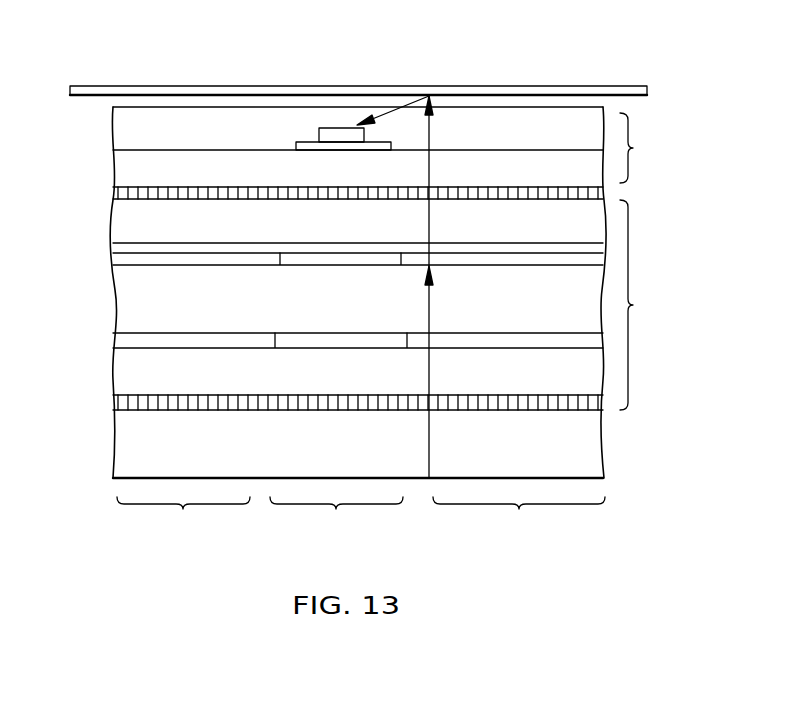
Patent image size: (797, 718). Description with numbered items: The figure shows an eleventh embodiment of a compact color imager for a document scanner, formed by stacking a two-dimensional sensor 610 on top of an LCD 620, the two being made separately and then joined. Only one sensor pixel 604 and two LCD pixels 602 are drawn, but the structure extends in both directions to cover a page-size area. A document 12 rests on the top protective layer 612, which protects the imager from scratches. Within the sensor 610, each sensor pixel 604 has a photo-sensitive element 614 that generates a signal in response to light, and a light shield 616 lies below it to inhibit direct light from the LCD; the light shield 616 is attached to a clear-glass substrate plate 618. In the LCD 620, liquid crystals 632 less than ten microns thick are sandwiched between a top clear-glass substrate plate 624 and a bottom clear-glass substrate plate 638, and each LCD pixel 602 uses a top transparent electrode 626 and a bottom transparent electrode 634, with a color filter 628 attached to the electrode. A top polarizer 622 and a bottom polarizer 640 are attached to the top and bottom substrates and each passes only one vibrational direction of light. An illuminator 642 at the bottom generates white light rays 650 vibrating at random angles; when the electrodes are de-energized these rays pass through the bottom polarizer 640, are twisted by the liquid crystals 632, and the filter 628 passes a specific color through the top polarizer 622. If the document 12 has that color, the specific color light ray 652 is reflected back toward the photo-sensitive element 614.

The document 12 is at (615, 86).
The top protective layer 612 is at (114, 113).
The photo-sensitive element 614 is at (318, 133).
The light shield 616 is at (297, 143).
The clear-glass substrate plate 618 is at (116, 168).
The top polarizer 622 is at (113, 189).
The top clear-glass substrate plate 624 is at (119, 222).
The top transparent electrode 626 is at (113, 247).
The color filter 628 is at (113, 260).
The liquid crystals 632 is at (116, 307).
The bottom transparent electrode 634 is at (114, 341).
The bottom clear-glass substrate plate 638 is at (116, 378).
The bottom polarizer 640 is at (114, 404).
The illuminator 642 is at (116, 438).
The white light rays 650 is at (430, 447).
The specific color light ray 652 is at (440, 128).
The two-dimensional sensor 610 is at (646, 148).
The LCD 620 is at (647, 305).
The LCD pixel 602 is at (361, 518).
The sensor pixel 604 is at (336, 518).